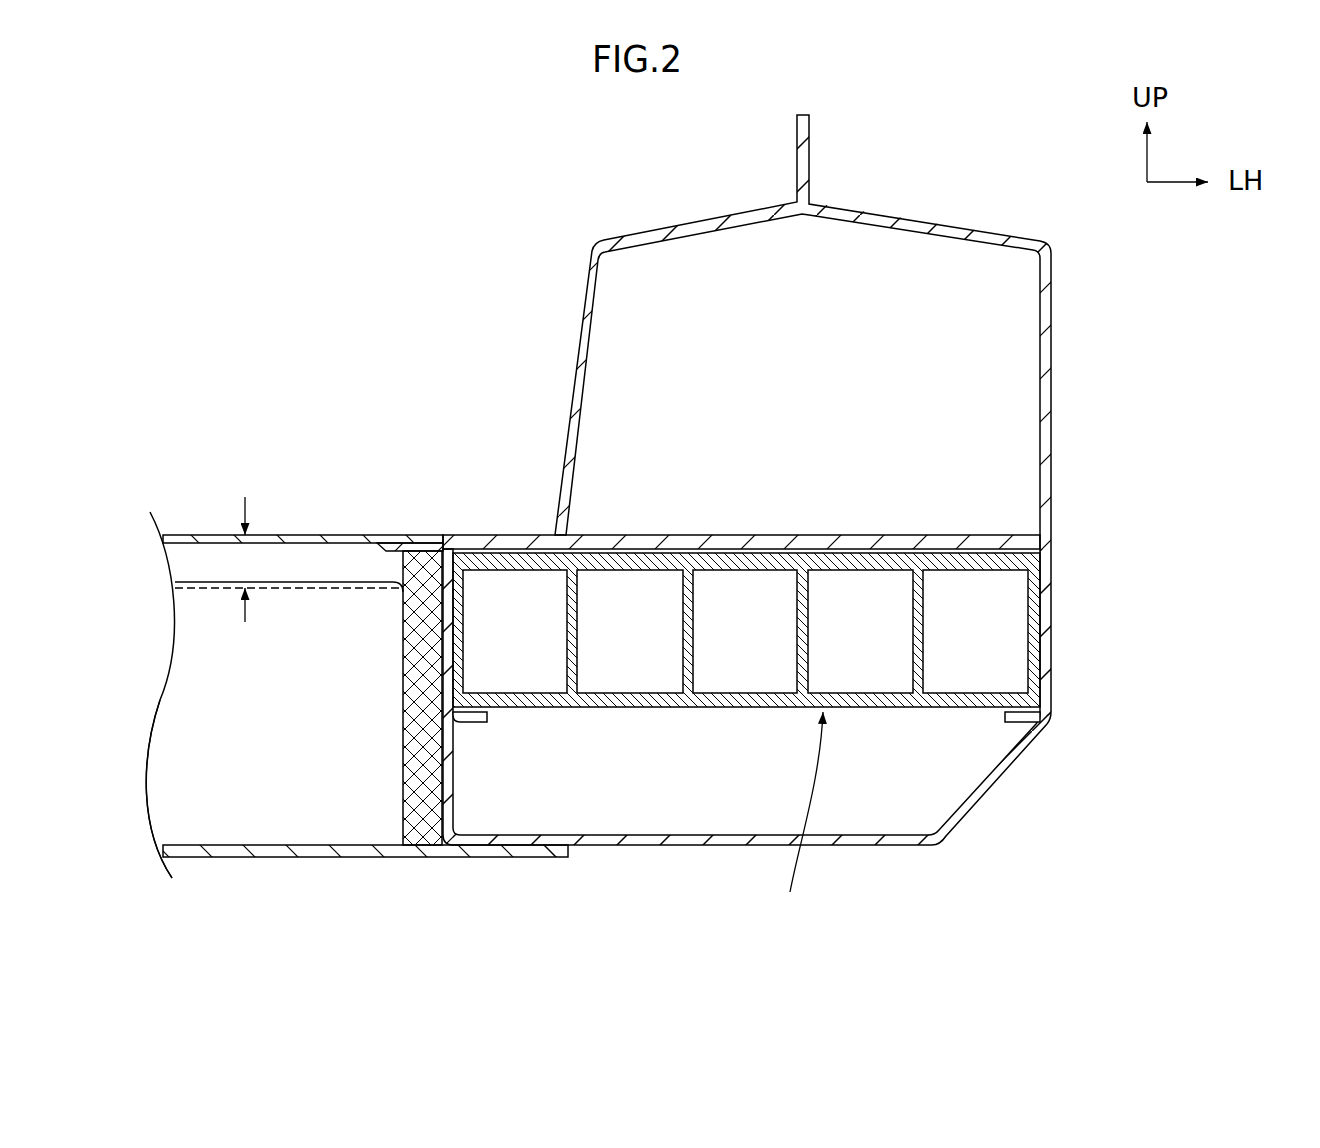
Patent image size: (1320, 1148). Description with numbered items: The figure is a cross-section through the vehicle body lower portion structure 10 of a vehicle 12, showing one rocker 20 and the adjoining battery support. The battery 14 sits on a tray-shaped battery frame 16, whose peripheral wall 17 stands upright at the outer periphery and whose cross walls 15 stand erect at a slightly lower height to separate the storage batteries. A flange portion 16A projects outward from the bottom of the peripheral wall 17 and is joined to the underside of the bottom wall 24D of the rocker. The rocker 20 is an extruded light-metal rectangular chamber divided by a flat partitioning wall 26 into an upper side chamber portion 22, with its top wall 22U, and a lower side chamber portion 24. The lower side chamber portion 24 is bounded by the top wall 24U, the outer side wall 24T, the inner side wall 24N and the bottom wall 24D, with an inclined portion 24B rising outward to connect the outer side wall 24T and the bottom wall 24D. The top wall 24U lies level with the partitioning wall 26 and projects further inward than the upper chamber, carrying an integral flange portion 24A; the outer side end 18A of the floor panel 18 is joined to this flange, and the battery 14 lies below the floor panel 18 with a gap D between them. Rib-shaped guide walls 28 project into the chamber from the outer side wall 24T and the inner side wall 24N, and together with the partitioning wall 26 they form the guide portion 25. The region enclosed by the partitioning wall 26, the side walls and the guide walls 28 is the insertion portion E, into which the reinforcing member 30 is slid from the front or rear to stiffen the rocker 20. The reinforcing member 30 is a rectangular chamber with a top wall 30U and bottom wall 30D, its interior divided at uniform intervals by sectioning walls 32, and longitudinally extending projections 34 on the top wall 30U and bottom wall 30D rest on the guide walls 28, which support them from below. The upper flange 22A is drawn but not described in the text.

The vehicle body lower portion structure 10 is at (908, 866).
The vehicle 12 is at (931, 183).
The battery 14 is at (203, 577).
The cross wall 15 is at (222, 815).
The battery frame 16 is at (331, 881).
The flange portion 16A is at (566, 845).
The peripheral wall 17 is at (423, 845).
The floor panel 18 is at (292, 529).
The vehicle transverse direction outer side end 18A is at (445, 535).
The rocker 20 is at (1197, 442).
The upper side chamber portion 22 is at (1060, 422).
The upper flange 22A is at (810, 173).
The top wall 22U is at (690, 220).
The lower side chamber portion 24 is at (1060, 640).
The flange portion 24A is at (377, 543).
The inclined portion 24B is at (982, 804).
The bottom wall 24D is at (656, 845).
The inner side wall 24N is at (423, 760).
The outer side wall 24T is at (1053, 697).
The top wall 24U is at (497, 535).
The guide portion 25 is at (746, 667).
The partitioning wall 26 is at (812, 553).
The guide wall 28 is at (490, 720).
The reinforcing member 30 is at (868, 712).
The top wall 30U is at (612, 553).
The bottom wall 30D is at (663, 707).
The sectioning wall 32 is at (696, 620).
The projection 34 is at (918, 553).
The gap D is at (245, 497).
The insertion portion E is at (800, 817).